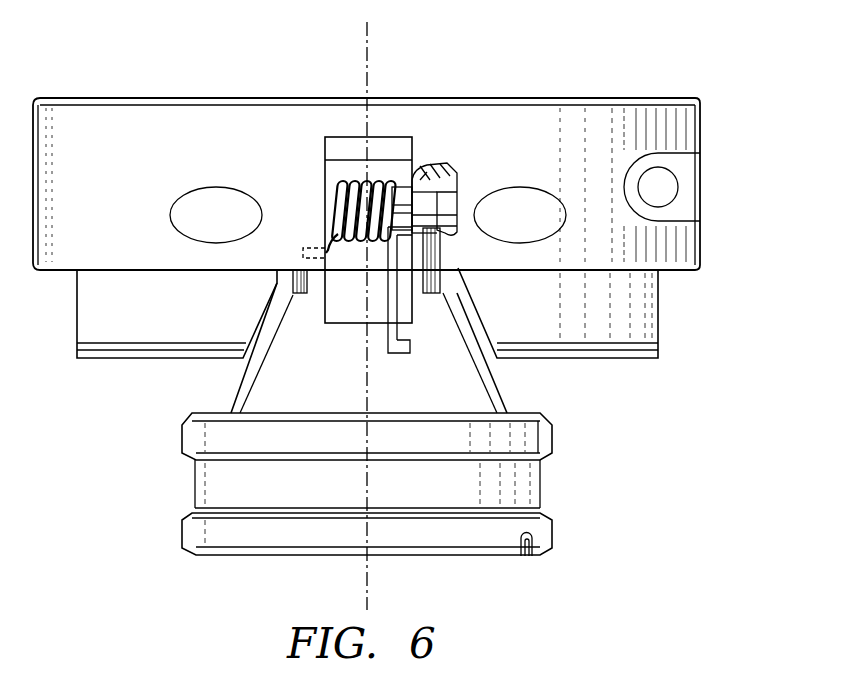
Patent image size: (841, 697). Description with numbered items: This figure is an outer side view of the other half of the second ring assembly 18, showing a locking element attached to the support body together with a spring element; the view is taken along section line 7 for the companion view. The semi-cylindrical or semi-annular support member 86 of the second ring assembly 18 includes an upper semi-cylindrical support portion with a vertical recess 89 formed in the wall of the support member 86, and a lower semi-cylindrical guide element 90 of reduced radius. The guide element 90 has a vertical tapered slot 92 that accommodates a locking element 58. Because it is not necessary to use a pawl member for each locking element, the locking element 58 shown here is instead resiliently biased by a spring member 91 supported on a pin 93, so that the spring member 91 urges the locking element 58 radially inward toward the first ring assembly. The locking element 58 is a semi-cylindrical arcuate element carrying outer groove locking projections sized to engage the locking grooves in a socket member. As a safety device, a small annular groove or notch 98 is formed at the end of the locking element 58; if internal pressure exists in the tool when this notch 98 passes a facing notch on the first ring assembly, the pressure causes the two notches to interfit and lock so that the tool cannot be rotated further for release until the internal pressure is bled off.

The section line 7- 7 is at (356, 43).
The second ring assembly 18 is at (243, 126).
The support member 86 is at (640, 124).
The vertical recess 89 is at (333, 165).
The spring member 91 is at (369, 180).
The pin 93 is at (440, 202).
The guide element 90 is at (624, 312).
The vertical tapered slot 92 is at (262, 322).
The locking element 58 is at (575, 436).
The notch 98 is at (532, 545).